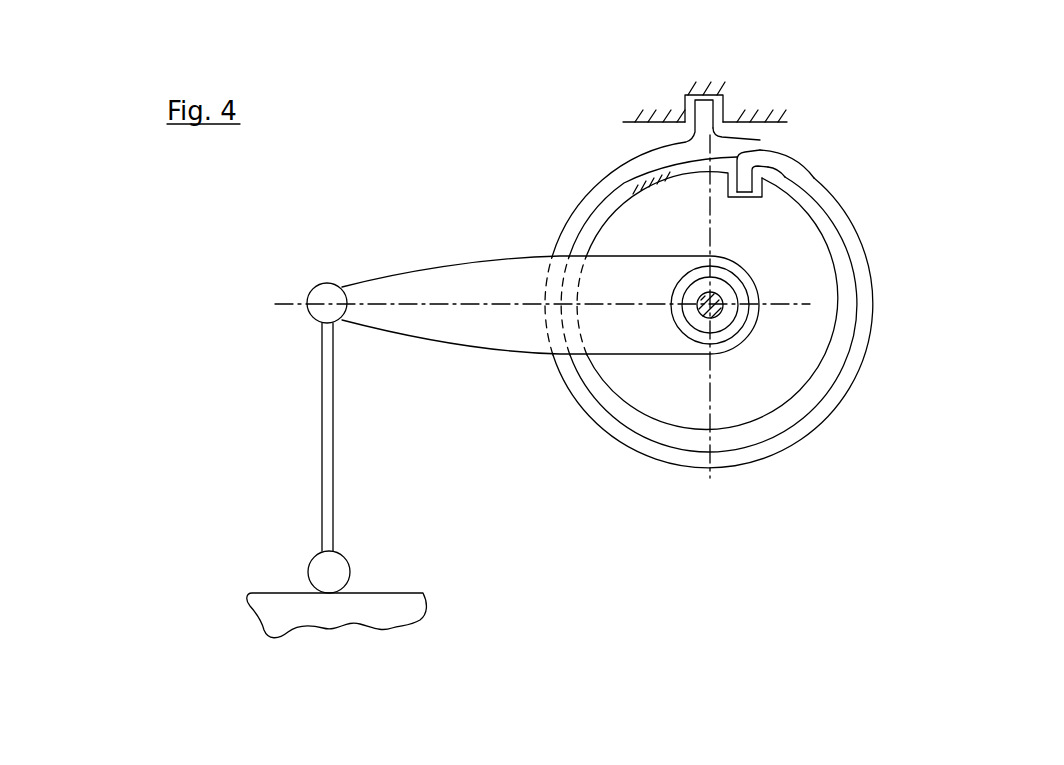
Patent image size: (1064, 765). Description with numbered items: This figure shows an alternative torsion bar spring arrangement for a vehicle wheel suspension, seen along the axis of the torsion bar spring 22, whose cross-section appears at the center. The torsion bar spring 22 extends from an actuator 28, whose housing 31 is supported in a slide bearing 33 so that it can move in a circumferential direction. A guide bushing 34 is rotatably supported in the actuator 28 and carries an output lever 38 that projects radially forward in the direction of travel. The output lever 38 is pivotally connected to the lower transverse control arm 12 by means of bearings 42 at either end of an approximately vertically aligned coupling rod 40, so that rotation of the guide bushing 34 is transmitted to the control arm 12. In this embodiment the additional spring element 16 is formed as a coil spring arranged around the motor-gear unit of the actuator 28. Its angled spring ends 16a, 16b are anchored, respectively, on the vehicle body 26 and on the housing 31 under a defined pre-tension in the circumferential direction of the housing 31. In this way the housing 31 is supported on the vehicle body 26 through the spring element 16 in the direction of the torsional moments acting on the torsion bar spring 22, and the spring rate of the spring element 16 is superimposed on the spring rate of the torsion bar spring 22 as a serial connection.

The lower transverse control arm 12 is at (358, 627).
The spring element 16 is at (867, 287).
The angled spring end 16a is at (760, 140).
The angled spring end 16b is at (760, 156).
The torsion bar spring 22 is at (725, 293).
The vehicle body 26 is at (730, 103).
The actuator 28 is at (849, 326).
The housing 31 is at (782, 398).
The slide bearing 33 is at (643, 175).
The guide bushing 34 is at (683, 333).
The output lever 38 is at (421, 259).
The coupling rod 40 is at (321, 435).
The bearings 42 is at (310, 283).